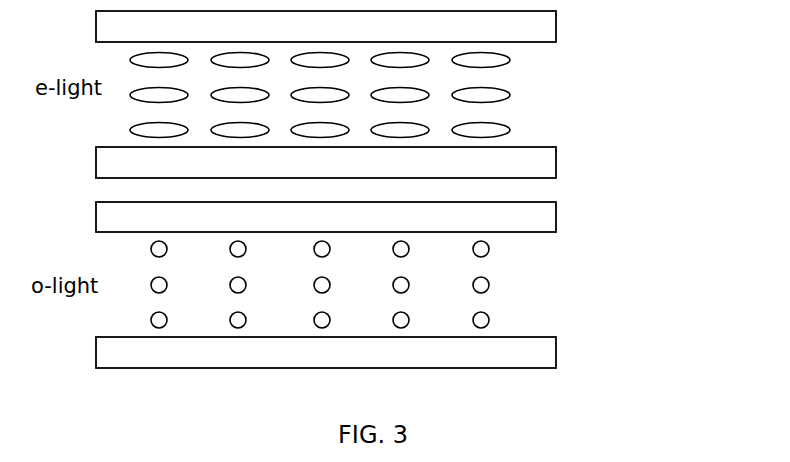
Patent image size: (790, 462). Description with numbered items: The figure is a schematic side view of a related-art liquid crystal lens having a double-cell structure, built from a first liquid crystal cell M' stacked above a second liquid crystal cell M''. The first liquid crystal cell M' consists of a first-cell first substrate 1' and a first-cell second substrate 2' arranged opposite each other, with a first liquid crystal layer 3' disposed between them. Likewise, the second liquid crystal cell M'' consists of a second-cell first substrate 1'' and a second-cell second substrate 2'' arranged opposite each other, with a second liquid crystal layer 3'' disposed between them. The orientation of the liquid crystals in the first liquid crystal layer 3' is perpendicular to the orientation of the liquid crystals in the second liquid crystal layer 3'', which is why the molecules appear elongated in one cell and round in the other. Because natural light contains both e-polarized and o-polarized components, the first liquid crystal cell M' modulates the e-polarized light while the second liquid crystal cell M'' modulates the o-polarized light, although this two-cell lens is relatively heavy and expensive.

The first-cell second substrate 2' is at (366, 26).
The first liquid crystal layer 3' is at (383, 95).
The first-cell first substrate 1' is at (366, 162).
The first liquid crystal cell M' is at (400, 94).
The second-cell second substrate 2'' is at (368, 216).
The second liquid crystal layer 3'' is at (395, 284).
The second-cell first substrate 1'' is at (368, 352).
The second liquid crystal cell M'' is at (405, 284).